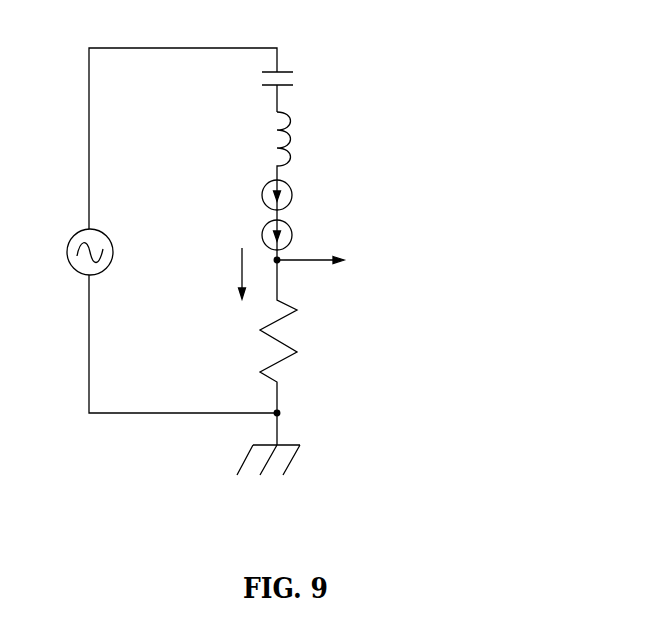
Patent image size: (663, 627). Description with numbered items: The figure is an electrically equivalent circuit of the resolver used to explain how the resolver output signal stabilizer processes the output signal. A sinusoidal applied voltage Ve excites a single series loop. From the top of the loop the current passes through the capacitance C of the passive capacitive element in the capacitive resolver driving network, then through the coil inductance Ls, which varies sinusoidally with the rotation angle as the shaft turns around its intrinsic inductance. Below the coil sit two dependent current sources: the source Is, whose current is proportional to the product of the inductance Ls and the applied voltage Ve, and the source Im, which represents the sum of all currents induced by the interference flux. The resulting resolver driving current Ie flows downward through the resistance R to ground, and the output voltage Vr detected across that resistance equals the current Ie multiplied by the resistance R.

The capacitance of the passive capacitive element C is at (290, 90).
The inductance of the coil Ls is at (398, 146).
The dependent current source Is is at (340, 195).
The dependent current source induced by magnetic flux Im is at (356, 235).
The output voltage Vr is at (350, 280).
The resolver driving current Ie is at (232, 273).
The resistance to detect the output voltage R is at (262, 352).
The applied voltage to resolver Ve is at (148, 231).